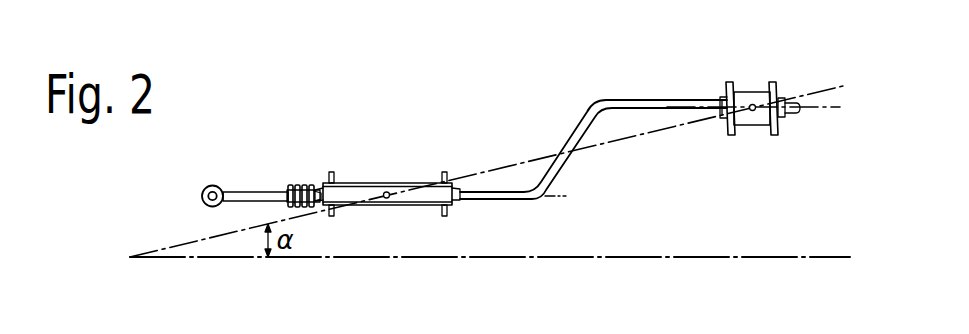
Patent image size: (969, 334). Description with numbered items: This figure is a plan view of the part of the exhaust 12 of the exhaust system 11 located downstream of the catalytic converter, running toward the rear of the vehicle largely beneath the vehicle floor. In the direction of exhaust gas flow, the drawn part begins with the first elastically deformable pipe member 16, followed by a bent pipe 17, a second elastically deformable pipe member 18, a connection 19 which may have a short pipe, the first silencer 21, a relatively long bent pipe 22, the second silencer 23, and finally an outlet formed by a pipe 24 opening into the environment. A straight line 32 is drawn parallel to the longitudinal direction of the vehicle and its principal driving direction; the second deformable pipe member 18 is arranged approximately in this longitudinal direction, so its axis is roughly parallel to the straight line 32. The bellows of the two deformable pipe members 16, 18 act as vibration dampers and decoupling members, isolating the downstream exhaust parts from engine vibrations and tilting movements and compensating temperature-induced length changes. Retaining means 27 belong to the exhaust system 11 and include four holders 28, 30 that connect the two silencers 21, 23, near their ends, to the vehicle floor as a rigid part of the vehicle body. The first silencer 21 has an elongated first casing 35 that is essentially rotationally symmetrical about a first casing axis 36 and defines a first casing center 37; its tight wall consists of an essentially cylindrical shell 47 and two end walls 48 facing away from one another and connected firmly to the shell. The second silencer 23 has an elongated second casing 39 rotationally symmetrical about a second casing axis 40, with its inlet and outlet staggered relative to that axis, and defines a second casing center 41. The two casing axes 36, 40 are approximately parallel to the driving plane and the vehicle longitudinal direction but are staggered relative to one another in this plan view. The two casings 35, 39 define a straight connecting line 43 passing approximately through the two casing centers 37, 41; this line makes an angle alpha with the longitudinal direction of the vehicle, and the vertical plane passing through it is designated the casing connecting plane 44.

The exhaust system 11 is at (200, 198).
The exhaust 12 is at (201, 197).
The first elastically deformable pipe member 16 is at (203, 190).
The bent pipe 17 is at (253, 191).
The second elastically deformable pipe member 18 is at (300, 186).
The connection 19 is at (316, 188).
The first silencer 21 is at (365, 184).
The bent pipe 22 is at (588, 105).
The second silencer 23 is at (742, 90).
The pipe 24 is at (797, 114).
The retaining means 27 is at (748, 92).
The holders 28 is at (333, 175).
The holders 30 is at (727, 84).
The straight line 32 is at (570, 257).
The first casing 35 is at (428, 184).
The first casing axis 36 is at (432, 208).
The first casing center 37 is at (388, 192).
The second casing 39 is at (755, 90).
The second casing axis 40 is at (828, 113).
The second casing center 41 is at (752, 112).
The straight connecting line 43 is at (662, 135).
The casing connecting plane 44 is at (610, 143).
The shell 47 is at (392, 204).
The end walls 48 is at (321, 186).